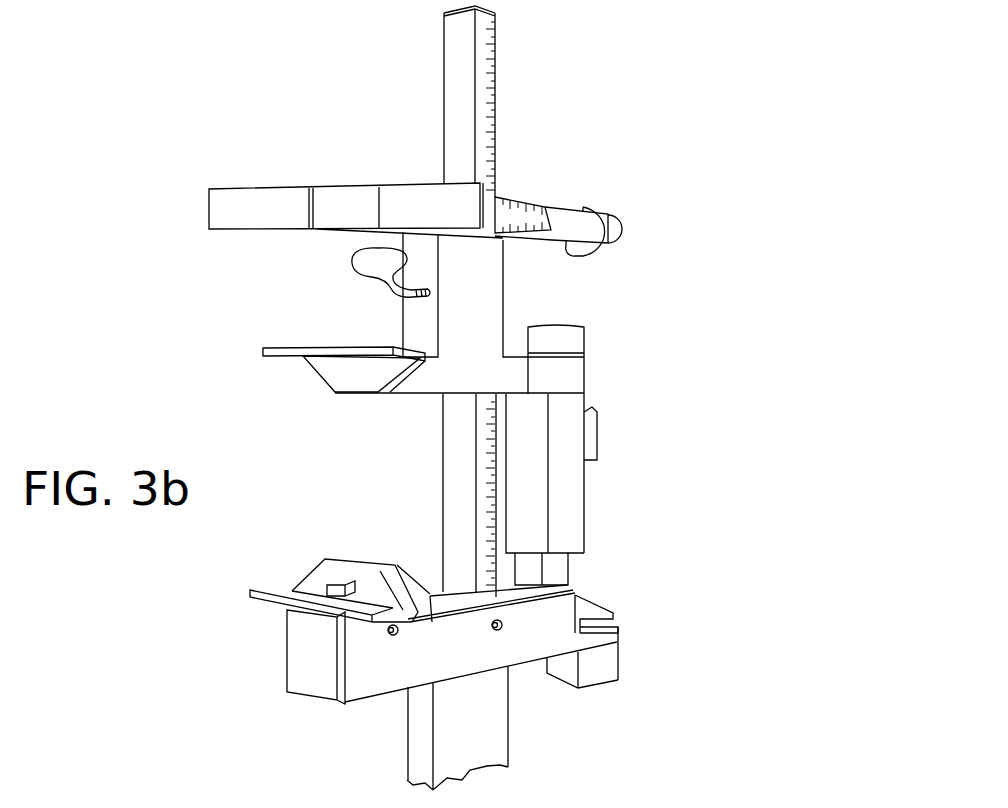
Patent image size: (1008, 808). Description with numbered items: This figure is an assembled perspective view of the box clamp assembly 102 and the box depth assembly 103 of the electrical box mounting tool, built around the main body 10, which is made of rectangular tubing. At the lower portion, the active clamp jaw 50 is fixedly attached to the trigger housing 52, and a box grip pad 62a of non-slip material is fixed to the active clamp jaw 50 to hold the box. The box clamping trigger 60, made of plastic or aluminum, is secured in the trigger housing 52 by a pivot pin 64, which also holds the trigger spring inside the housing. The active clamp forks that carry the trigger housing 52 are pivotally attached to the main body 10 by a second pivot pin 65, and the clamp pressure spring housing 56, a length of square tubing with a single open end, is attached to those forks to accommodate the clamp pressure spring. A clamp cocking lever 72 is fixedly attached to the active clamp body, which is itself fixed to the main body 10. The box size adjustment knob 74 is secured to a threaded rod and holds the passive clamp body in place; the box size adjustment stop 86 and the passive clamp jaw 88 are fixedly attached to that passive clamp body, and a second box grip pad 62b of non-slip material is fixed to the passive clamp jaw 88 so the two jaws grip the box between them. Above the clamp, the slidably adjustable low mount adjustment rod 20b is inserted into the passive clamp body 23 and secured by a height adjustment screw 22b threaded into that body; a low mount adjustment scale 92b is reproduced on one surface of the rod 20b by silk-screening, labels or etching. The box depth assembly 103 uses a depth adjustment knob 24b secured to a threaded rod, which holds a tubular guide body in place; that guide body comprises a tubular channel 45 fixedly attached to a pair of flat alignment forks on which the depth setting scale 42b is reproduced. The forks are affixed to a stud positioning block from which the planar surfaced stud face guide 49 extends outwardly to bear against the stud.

The box depth assembly 103 is at (190, 165).
The box clamp assembly 102 is at (674, 490).
The low mount adjustment rod 20b is at (456, 62).
The low mount adjustment scale 92b is at (493, 118).
The stud face guide 49 is at (338, 203).
The depth setting scale 42b is at (517, 203).
The tubular channel 45 is at (567, 213).
The depth adjustment knob 24b is at (628, 222).
The height adjustment screw 22b is at (372, 261).
The passive clamp body 23 is at (485, 280).
The box size adjustment knob 74 is at (573, 337).
The box size adjustment stop 86 is at (593, 427).
The box grip pad 62b is at (302, 360).
The passive clamp jaw 88 is at (347, 380).
The active clamp jaw 50 is at (318, 578).
The box clamping trigger 60 is at (330, 583).
The box grip pad 62a is at (292, 592).
The trigger housing 52 is at (368, 670).
The clamp cocking lever 72 is at (593, 605).
The clamp pressure spring housing 56 is at (603, 668).
The pivot pin 64 is at (397, 637).
The pivot pin 65 is at (499, 631).
The main body 10 is at (485, 737).